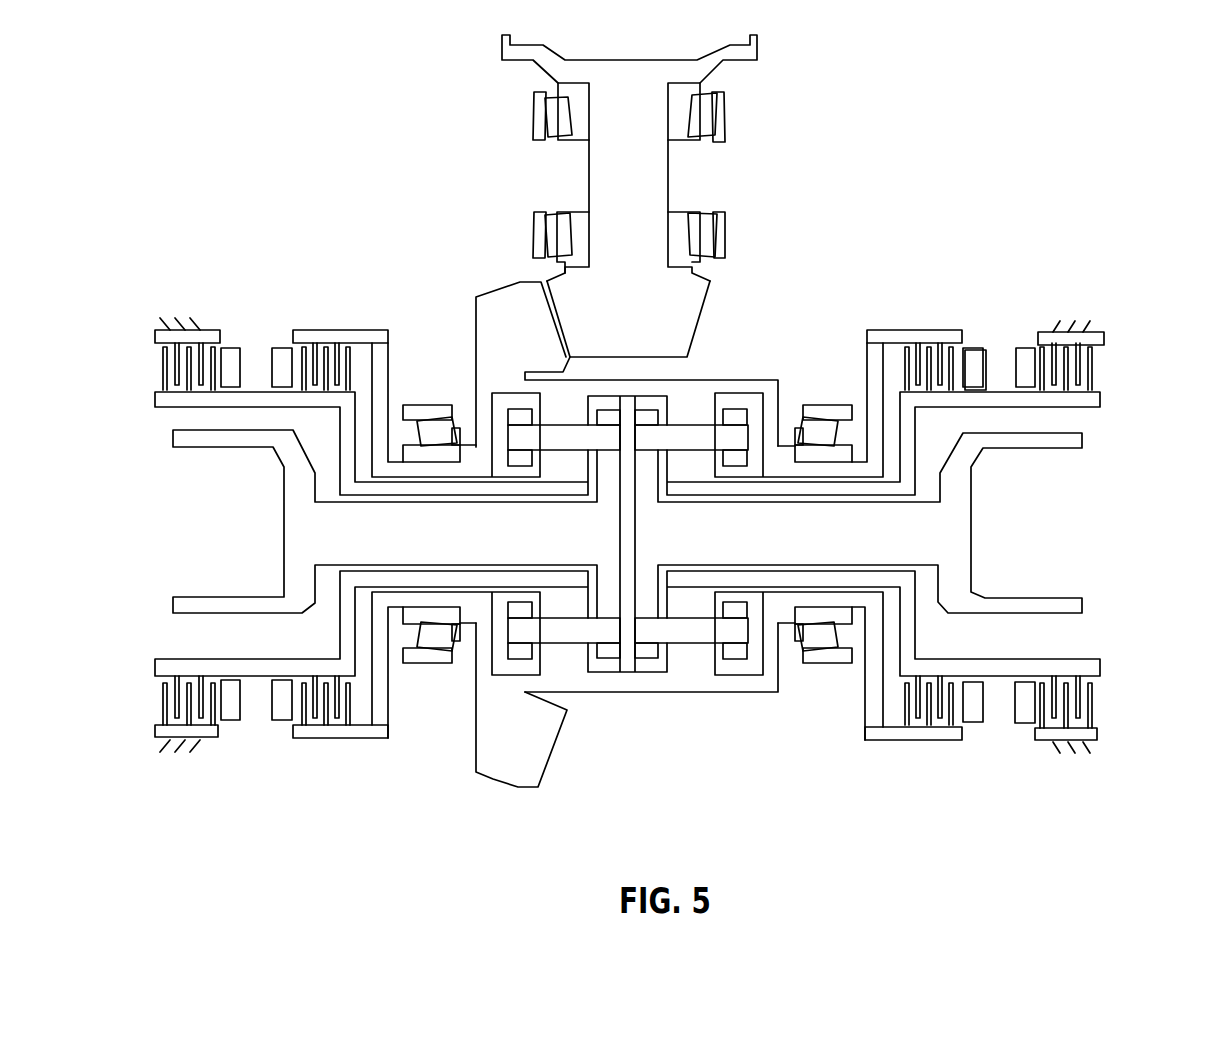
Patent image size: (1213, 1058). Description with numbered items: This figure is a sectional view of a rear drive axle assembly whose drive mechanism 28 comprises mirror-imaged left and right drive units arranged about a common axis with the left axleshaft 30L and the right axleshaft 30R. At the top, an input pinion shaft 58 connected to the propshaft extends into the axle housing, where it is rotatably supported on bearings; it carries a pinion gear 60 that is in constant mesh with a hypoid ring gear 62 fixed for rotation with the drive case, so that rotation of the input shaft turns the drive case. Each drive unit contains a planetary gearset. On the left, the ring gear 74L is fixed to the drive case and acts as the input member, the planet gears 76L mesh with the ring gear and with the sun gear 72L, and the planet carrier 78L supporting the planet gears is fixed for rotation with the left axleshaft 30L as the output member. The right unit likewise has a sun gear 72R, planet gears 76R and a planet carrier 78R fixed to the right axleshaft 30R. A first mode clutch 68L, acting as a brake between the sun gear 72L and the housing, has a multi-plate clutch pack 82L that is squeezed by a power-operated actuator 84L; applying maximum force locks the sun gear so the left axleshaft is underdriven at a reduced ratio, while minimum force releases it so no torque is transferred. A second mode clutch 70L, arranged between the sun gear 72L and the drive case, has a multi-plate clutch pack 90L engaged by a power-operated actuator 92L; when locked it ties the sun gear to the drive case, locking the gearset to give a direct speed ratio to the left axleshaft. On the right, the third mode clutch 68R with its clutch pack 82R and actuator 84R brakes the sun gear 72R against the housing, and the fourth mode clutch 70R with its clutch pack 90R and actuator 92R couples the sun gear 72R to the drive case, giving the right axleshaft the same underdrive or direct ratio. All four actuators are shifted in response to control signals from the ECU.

The drive mechanism 28 is at (868, 142).
The left axleshaft 30L is at (345, 528).
The right axleshaft 30R is at (958, 520).
The input pinion shaft 58 is at (635, 173).
The pinion gear 60 is at (682, 303).
The hypoid ring gear 62 is at (537, 747).
The first mode clutch 68L is at (228, 322).
The third mode clutch 68R is at (1110, 325).
The second mode clutch 70L is at (324, 326).
The fourth mode clutch 70R is at (913, 328).
The sun gear 72L is at (568, 482).
The sun gear 72R is at (688, 490).
The ring gear 74L is at (572, 678).
The planet gears 76L is at (561, 414).
The planet gears 76R is at (693, 413).
The planet carrier 78L is at (607, 648).
The planet carrier 78R is at (647, 648).
The multi-plate clutch pack 82L is at (192, 717).
The multi-plate clutch pack 82R is at (1082, 703).
The power-operated actuator 84L is at (235, 358).
The power-operated actuator 84R is at (1025, 362).
The multi-plate clutch pack 90L is at (333, 705).
The clutch pack 90R is at (933, 703).
The power-operated actuator 92L is at (282, 717).
The power-operated actuator 92R is at (975, 362).